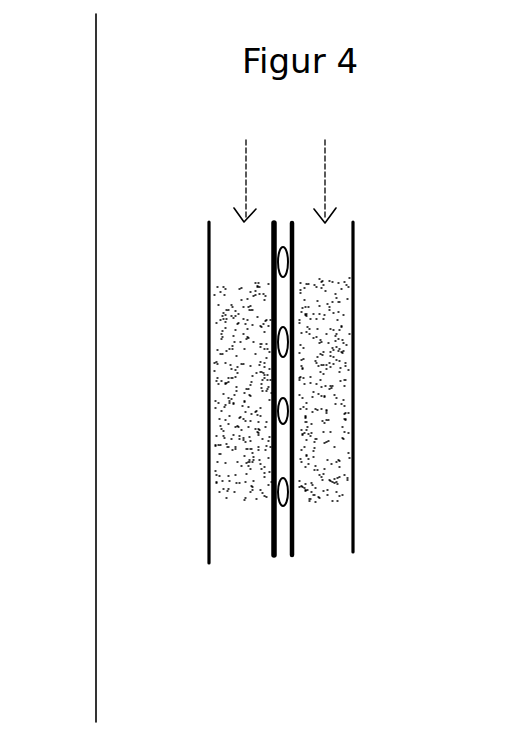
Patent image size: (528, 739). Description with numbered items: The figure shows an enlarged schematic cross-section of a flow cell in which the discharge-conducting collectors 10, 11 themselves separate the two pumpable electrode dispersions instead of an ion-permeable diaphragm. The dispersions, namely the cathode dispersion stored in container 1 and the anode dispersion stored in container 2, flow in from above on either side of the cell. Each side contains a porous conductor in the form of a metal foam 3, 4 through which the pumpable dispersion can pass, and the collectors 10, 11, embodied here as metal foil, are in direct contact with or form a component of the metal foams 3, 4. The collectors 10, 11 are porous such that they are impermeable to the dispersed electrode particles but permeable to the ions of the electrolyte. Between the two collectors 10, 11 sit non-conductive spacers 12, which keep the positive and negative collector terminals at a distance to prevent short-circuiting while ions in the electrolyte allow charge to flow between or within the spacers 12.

The container for positive electrode pumpable material 1 is at (245, 169).
The container for negative electrode pumpable material 2 is at (325, 170).
The metal foam 3 is at (235, 428).
The metal foam 4 is at (328, 423).
The collector 10 is at (272, 537).
The collector 11 is at (294, 528).
The spacer 12 is at (280, 263).